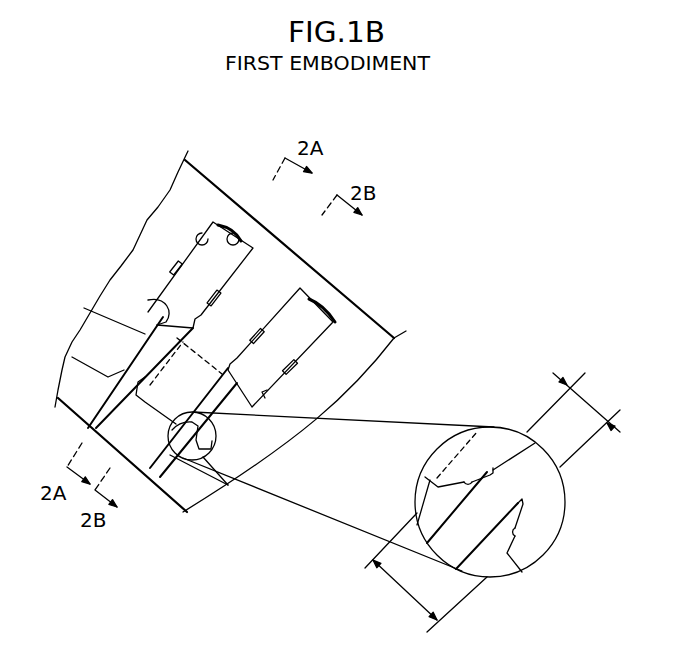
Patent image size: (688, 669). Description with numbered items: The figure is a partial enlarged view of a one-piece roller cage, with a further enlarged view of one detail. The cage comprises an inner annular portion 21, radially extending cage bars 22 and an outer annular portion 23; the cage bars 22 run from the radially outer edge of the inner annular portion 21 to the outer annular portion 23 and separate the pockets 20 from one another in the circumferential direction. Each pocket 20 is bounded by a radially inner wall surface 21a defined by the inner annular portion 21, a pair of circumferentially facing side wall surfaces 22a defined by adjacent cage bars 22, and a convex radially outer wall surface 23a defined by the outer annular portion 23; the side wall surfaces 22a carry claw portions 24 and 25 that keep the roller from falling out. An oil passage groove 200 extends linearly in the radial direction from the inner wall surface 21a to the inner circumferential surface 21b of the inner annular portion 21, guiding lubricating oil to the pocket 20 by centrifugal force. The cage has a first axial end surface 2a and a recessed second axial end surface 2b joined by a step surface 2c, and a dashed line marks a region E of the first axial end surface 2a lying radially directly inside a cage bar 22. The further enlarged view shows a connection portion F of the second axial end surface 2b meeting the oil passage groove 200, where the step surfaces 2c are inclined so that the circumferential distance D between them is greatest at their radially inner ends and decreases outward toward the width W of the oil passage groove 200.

The first axial end surface 2a is at (267, 442).
The second axial end surface 2b is at (137, 443).
The step surface 2c is at (467, 482).
The pocket 20 is at (220, 222).
The inner annular portion 21 is at (97, 351).
The radially inner wall surface 21a is at (147, 332).
The inner circumferential surface 21b is at (73, 410).
The cage bar 22 is at (255, 290).
The side wall surface 22a is at (199, 236).
The outer annular portion 23 is at (328, 290).
The radially outer wall surface 23a is at (241, 240).
The claw portion 24 is at (293, 367).
The claw portion 25 is at (284, 375).
The oil passage groove 200 is at (146, 331).
The region of the first axial end surface E is at (140, 356).
The connection portion F is at (218, 437).
The width of the oil passage groove W is at (573, 420).
The distance between the step surfaces D is at (426, 572).